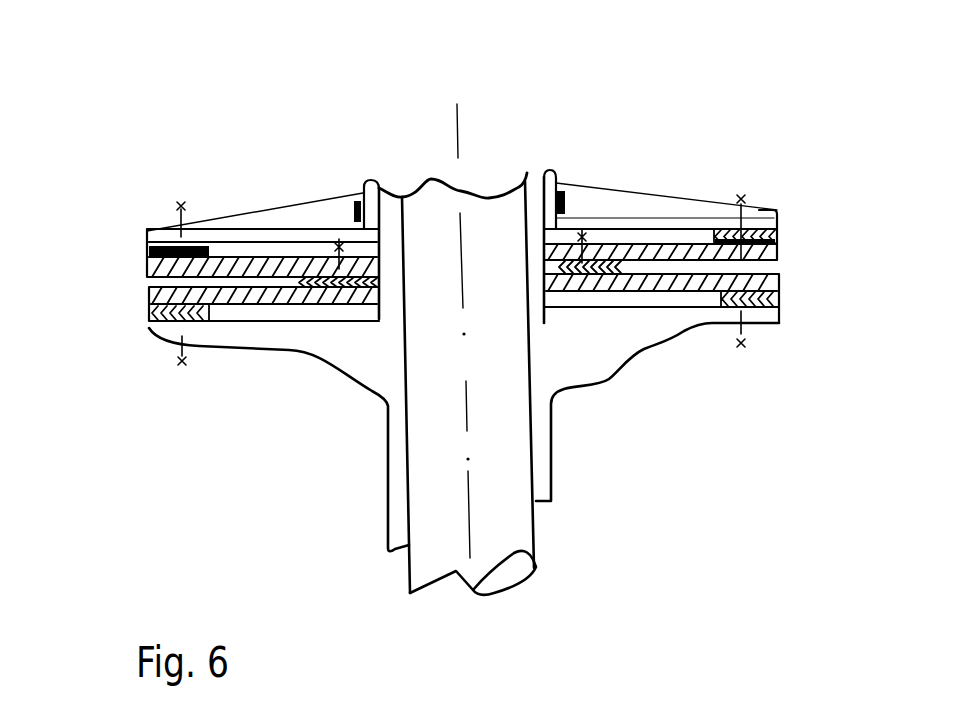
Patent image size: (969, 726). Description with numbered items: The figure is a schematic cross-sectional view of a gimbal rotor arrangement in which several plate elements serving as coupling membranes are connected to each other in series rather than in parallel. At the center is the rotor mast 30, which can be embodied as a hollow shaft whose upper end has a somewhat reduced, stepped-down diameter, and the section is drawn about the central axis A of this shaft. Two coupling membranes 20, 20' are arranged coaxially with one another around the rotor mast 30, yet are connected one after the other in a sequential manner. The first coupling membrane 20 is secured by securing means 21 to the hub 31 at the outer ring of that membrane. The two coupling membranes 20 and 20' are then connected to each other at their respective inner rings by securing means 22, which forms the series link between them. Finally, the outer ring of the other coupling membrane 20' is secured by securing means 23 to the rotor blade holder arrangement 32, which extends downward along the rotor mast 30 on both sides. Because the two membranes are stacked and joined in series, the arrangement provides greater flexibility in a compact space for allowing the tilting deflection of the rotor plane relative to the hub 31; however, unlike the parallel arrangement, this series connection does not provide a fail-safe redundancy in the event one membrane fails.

The coupling membrane 20 is at (435, 268).
The coupling membrane 20' is at (446, 349).
The securing means 21 is at (148, 256).
The securing means 22 is at (300, 278).
The securing means 23 is at (150, 320).
The rotor mast 30 is at (522, 532).
The hub 31 is at (370, 182).
The rotor blade holder arrangement 32 is at (357, 360).
The axis A is at (462, 117).